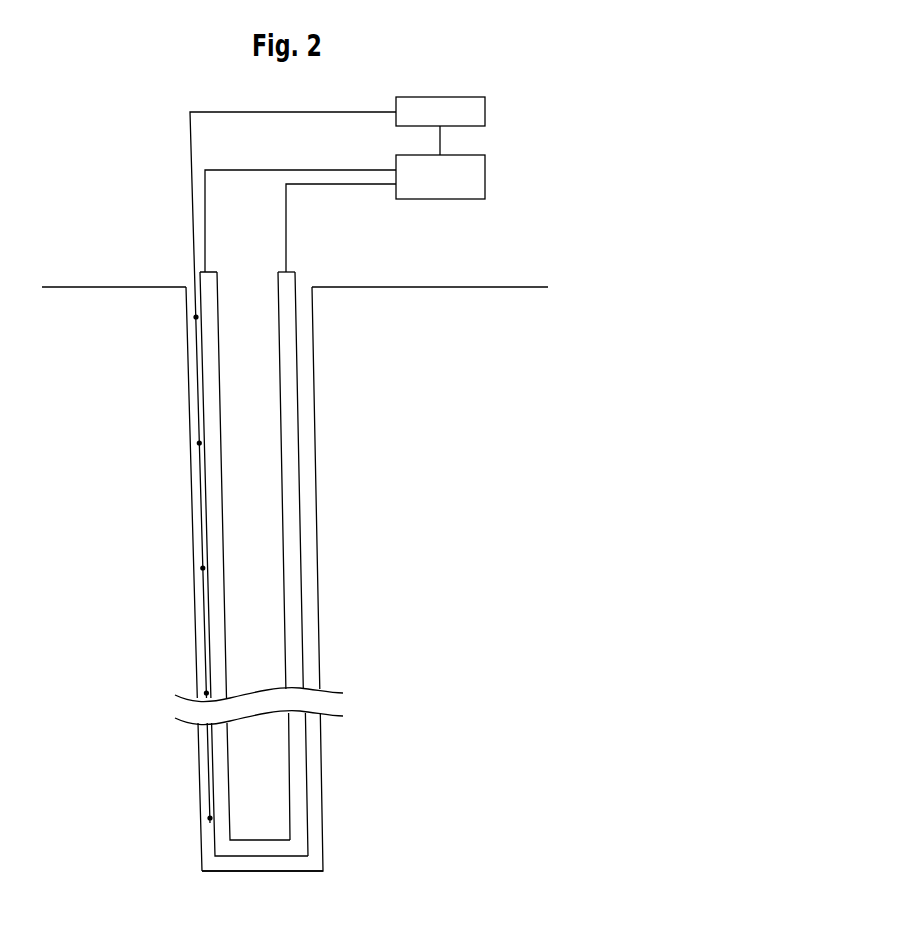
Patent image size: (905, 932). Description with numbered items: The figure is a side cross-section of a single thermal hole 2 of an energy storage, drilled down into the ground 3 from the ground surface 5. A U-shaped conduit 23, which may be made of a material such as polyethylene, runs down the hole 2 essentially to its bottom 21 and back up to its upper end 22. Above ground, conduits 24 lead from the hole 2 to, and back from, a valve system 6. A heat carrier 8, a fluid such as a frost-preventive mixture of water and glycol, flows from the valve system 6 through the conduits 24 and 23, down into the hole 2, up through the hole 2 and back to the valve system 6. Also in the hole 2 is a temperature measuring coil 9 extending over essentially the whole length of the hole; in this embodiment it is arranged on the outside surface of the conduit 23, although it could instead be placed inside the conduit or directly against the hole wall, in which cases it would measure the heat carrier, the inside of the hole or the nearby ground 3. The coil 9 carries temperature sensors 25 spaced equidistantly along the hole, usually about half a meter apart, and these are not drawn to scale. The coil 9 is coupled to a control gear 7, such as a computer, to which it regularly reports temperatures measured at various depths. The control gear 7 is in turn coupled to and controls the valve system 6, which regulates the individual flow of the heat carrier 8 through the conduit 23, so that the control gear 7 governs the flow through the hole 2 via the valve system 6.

The thermal hole 2 is at (315, 390).
The ground 3 is at (538, 453).
The ground surface 5 is at (457, 287).
The valve system 6 is at (485, 177).
The control gear 7 is at (485, 112).
The heat carrier 8 is at (290, 452).
The temperature measuring coil 9 is at (193, 209).
The bottom 21 is at (325, 868).
The upper end 22 is at (188, 303).
The U-shaped conduit 23 is at (208, 485).
The conduits 24 is at (352, 170).
The temperature sensors 25 is at (197, 318).